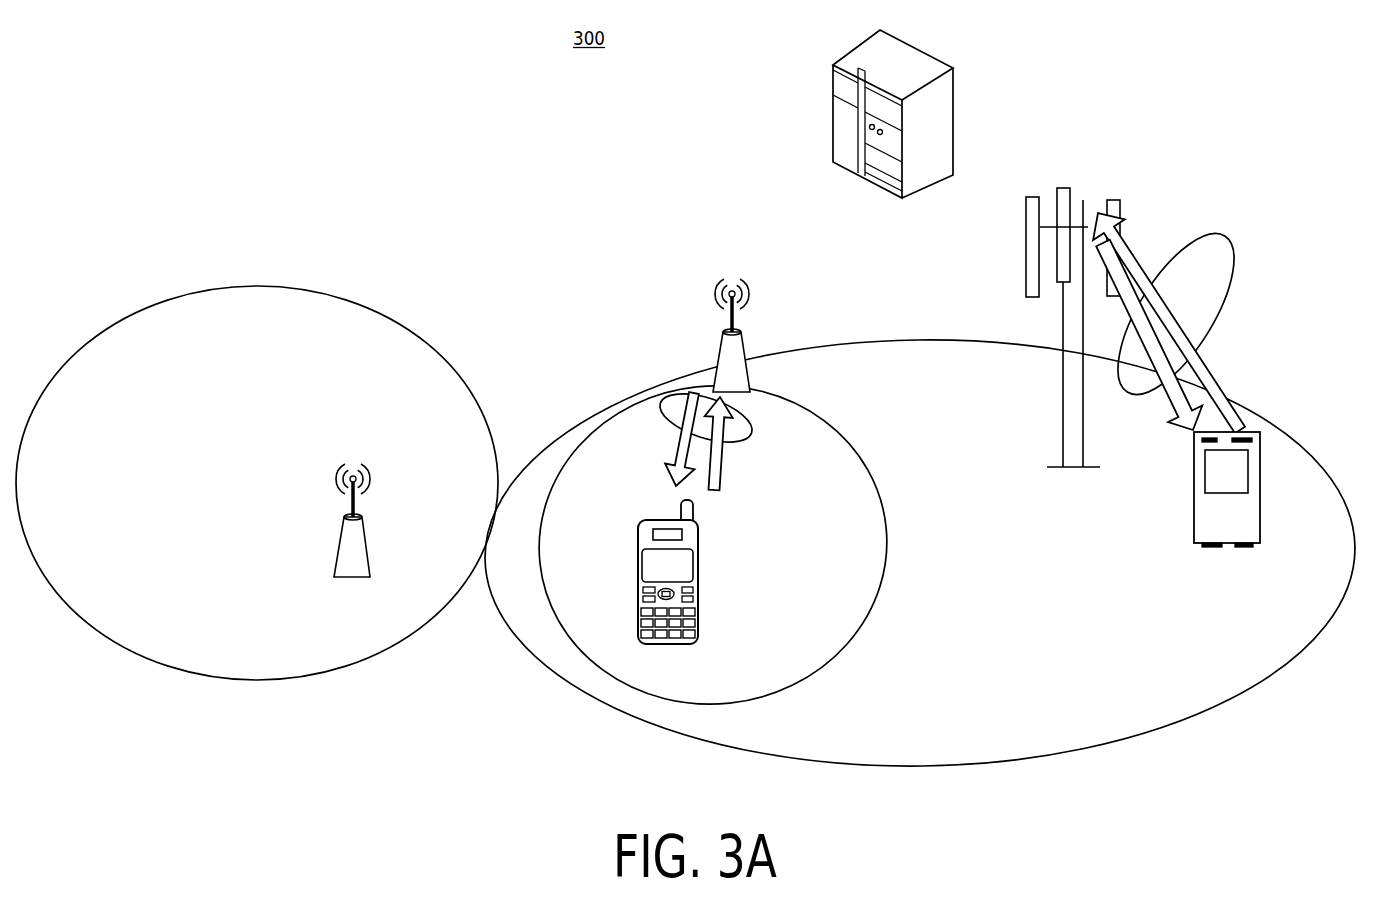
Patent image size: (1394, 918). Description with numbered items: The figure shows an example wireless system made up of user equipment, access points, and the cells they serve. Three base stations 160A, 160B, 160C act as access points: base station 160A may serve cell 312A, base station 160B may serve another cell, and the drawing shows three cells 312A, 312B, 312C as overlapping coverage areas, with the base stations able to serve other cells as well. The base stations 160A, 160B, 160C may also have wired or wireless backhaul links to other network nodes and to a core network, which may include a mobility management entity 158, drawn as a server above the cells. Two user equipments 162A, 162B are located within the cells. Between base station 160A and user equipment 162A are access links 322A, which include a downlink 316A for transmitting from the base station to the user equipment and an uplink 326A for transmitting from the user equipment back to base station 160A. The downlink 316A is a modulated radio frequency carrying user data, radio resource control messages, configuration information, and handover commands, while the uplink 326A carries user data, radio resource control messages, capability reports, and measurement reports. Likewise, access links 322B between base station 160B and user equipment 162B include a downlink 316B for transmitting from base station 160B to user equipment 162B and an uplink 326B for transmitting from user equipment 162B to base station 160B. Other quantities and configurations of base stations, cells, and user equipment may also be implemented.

The mobility management entity (MME) 158 is at (953, 68).
The base station 160A is at (1113, 205).
The base station 160B is at (752, 297).
The base station 160C is at (334, 479).
The user equipment 162A is at (1260, 495).
The user equipment 162B is at (663, 644).
The cell 312A is at (952, 765).
The cell 312B is at (511, 628).
The cell 312C is at (263, 286).
The downlink 316A is at (1173, 420).
The downlink 316B is at (680, 433).
The access links 322A is at (1230, 247).
The access links 322B is at (667, 403).
The uplink 326A is at (1212, 372).
The uplink 326B is at (724, 471).